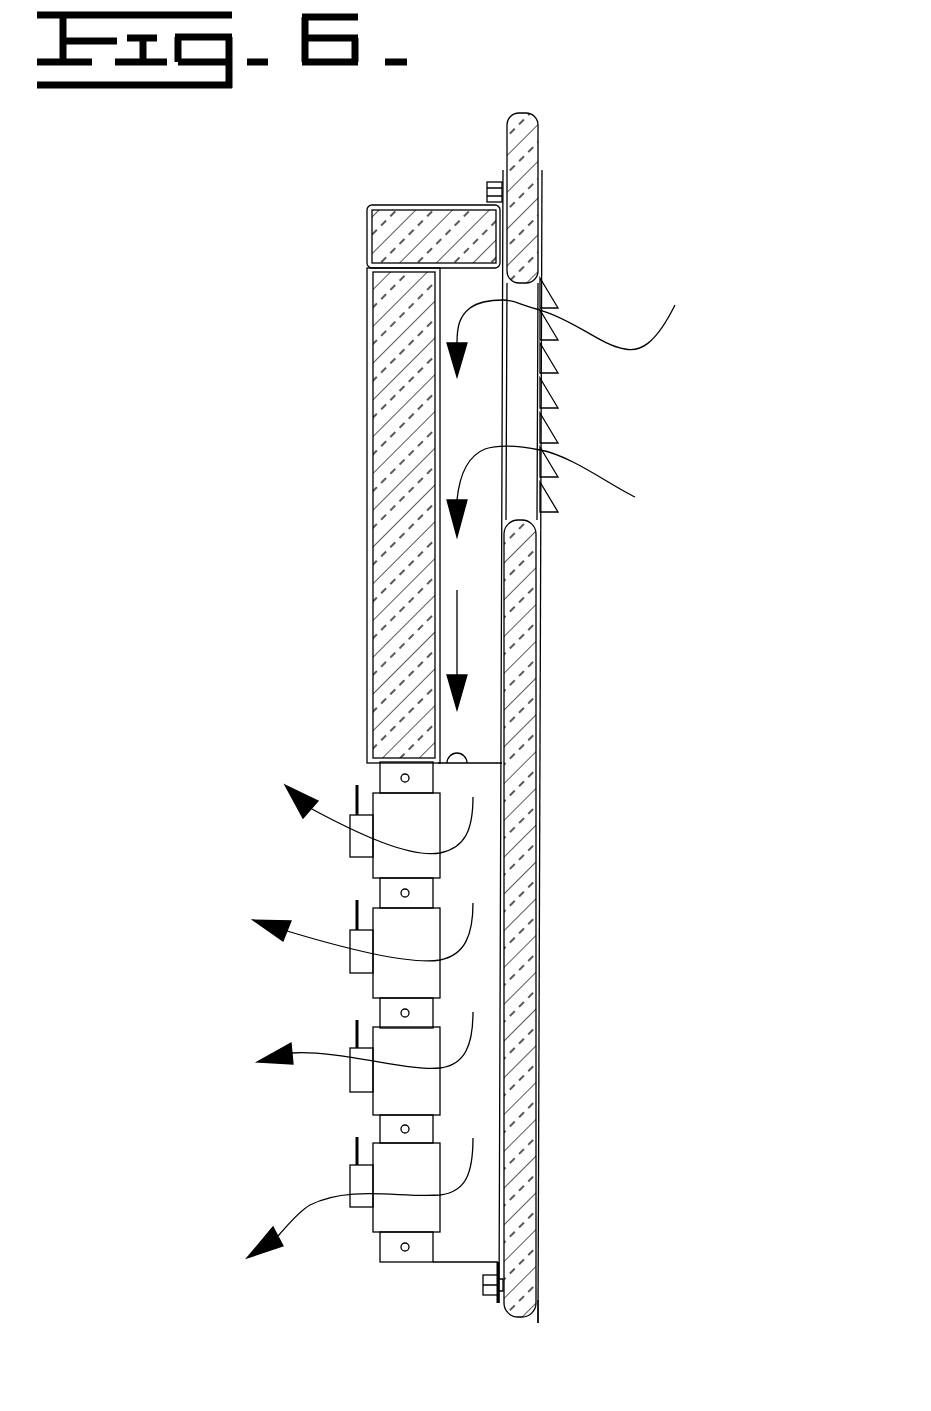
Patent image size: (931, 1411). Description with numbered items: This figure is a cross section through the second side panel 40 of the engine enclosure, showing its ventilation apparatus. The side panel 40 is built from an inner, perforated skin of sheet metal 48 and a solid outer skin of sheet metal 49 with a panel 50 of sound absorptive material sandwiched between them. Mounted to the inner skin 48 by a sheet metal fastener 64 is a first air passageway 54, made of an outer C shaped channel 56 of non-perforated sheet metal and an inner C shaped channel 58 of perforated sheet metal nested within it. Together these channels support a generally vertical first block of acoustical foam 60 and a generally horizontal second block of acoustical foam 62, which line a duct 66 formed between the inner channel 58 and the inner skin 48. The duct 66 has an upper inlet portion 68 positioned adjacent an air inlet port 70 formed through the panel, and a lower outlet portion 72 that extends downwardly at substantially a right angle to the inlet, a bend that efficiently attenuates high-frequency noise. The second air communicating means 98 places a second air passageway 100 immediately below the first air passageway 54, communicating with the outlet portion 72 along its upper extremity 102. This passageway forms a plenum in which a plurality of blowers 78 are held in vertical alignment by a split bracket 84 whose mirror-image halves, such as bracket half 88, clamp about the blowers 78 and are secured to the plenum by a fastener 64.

The second side panel 40 is at (540, 574).
The inner skin of sheet metal 48 is at (497, 1298).
The outer skin of sheet metal 49 is at (540, 1318).
The panel of sound absorptive material 50 is at (525, 1210).
The first air passageway 54 is at (283, 391).
The outer C shaped channel 56 is at (370, 237).
The inner C shaped channel 58 is at (445, 468).
The first block of acoustical foam 60 is at (370, 372).
The second block of acoustical foam 62 is at (392, 212).
The sheet metal fastener 64 is at (487, 190).
The duct 66 is at (489, 581).
The inlet portion 68 is at (479, 302).
The air inlet port 70 is at (540, 284).
The outlet portion 72 is at (482, 660).
The blowers 78 is at (350, 847).
The split bracket 84 is at (380, 1256).
The bracket half 88 is at (380, 893).
The second air communicating means 98 is at (256, 522).
The second air passageway 100 is at (380, 1012).
The upper extremity 102 is at (432, 765).